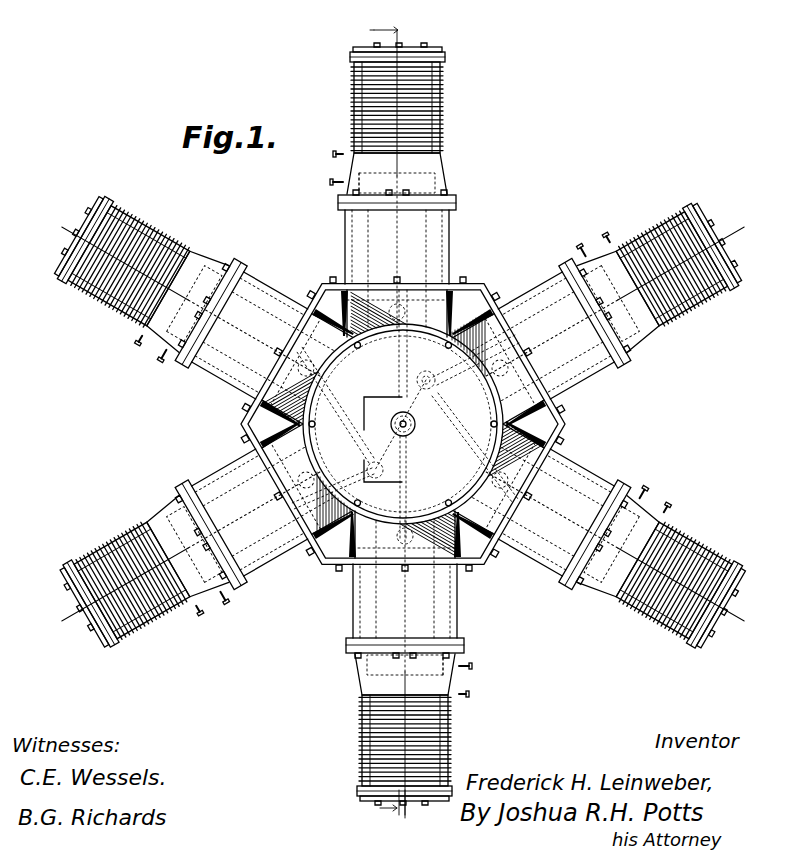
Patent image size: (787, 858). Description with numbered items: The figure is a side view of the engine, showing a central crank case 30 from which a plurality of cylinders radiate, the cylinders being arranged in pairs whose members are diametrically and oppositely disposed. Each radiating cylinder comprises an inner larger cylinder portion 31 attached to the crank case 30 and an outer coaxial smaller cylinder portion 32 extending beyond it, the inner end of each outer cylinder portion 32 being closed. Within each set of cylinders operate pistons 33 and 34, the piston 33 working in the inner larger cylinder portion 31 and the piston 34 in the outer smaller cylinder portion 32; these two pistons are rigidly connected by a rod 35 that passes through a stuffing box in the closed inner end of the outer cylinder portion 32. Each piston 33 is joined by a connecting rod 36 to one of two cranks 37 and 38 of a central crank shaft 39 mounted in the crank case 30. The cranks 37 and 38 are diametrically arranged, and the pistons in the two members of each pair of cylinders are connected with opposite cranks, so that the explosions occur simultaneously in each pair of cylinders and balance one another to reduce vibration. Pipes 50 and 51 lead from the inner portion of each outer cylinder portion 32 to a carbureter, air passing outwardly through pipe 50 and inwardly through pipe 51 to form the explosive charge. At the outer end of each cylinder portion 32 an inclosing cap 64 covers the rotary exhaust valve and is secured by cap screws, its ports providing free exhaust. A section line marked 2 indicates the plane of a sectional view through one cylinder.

The section line 2- 2 is at (387, 420).
The central crank case 30 is at (403, 424).
The inner larger cylinder portion 31 is at (276, 304).
The outer coaxial smaller cylinder portion 32 is at (440, 140).
The piston 33 is at (456, 272).
The piston 34 is at (442, 167).
The rod 35 is at (412, 230).
The connecting rod 36 is at (398, 362).
The crank 37 is at (425, 371).
The crank 38 is at (372, 462).
The central crank shaft 39 is at (414, 415).
The pipe 50 is at (333, 184).
The pipe 51 is at (338, 156).
The inclosing cap 64 is at (427, 49).